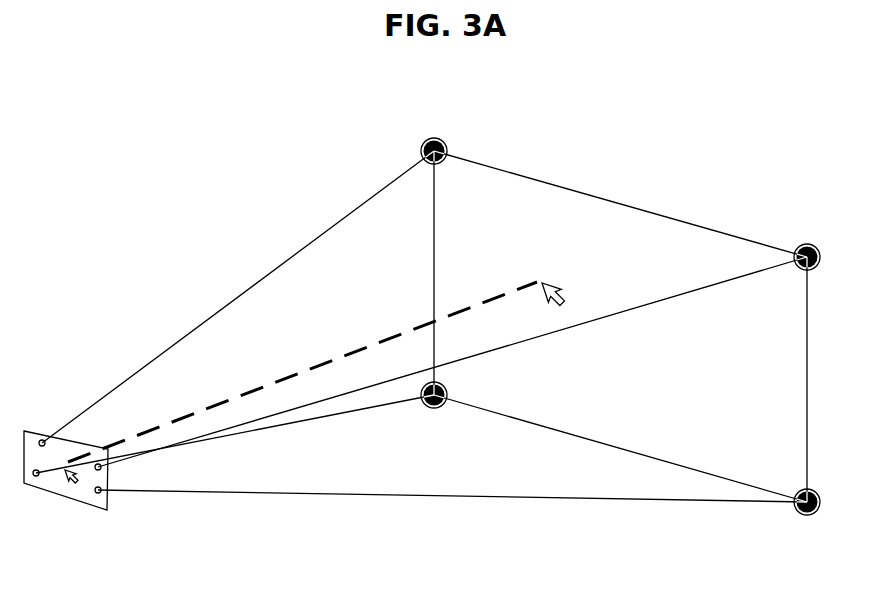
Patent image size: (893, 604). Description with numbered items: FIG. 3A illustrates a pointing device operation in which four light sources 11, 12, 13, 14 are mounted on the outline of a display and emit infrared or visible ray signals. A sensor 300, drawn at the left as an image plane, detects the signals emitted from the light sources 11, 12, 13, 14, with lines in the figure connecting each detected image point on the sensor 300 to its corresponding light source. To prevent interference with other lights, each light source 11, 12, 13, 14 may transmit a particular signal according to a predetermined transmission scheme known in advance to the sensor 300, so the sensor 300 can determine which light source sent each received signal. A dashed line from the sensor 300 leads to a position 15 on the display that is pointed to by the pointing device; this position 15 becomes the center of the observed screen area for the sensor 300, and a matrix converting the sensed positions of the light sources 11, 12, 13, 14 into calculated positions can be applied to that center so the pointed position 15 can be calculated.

The light source 11 is at (434, 138).
The light source 12 is at (809, 244).
The light source 13 is at (820, 496).
The light source 14 is at (448, 389).
The position pointed to by the pointing device 15 is at (540, 270).
The sensor 300 is at (76, 512).